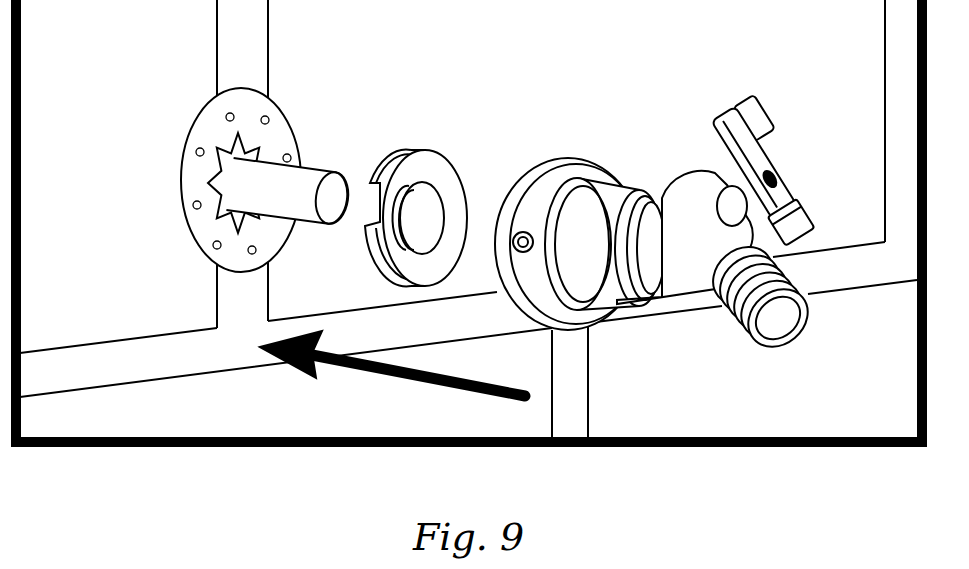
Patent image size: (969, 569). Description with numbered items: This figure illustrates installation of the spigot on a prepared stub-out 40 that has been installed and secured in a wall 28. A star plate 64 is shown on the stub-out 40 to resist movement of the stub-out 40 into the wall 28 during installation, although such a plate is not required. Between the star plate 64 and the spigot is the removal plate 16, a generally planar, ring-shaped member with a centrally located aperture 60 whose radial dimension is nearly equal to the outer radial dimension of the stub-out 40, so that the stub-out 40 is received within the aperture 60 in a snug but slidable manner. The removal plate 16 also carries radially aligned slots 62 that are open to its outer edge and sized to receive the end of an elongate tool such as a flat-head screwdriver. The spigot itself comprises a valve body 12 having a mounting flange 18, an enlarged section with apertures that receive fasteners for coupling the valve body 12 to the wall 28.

The valve body 12 is at (640, 192).
The removal plate 16 is at (412, 222).
The mounting flange 18 is at (575, 158).
The wall 28 is at (382, 46).
The stub-out 40 is at (325, 160).
The aperture 60 is at (440, 243).
The slots 62 is at (372, 207).
The star plate 64 is at (283, 106).